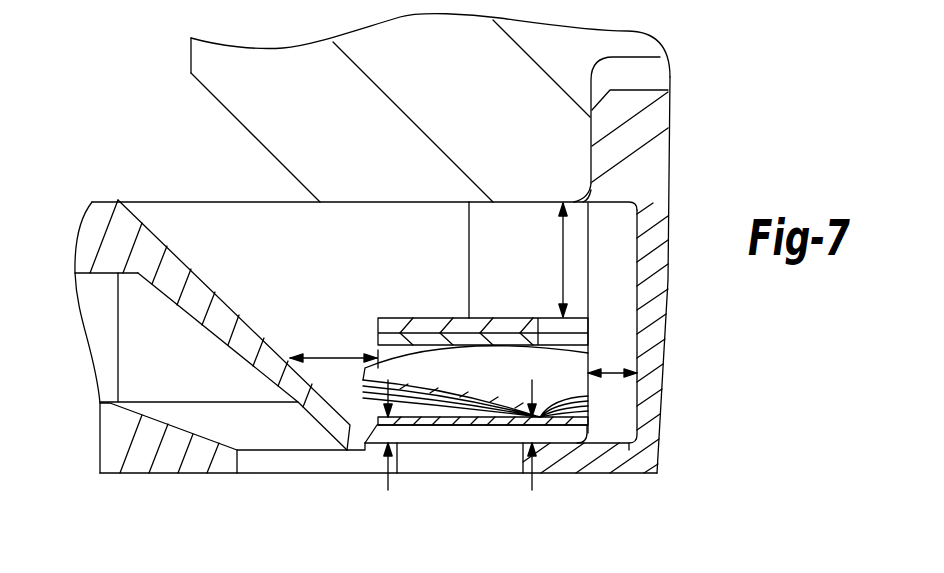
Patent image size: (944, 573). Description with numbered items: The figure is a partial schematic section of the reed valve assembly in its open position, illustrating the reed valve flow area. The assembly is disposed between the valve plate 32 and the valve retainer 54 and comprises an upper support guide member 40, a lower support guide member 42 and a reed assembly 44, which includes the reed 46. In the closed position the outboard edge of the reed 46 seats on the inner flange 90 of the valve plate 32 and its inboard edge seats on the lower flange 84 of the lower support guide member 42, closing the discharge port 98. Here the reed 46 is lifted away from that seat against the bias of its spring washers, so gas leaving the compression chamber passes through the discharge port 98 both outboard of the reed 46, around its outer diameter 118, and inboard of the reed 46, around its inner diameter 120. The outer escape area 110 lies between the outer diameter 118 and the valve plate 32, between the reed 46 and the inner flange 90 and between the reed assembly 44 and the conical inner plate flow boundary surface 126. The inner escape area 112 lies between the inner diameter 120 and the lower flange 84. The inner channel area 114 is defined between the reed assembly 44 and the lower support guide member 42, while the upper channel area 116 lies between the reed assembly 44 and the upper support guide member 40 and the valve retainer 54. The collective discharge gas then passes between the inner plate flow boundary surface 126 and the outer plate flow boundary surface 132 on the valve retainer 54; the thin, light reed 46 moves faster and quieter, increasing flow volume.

The valve plate 32 is at (100, 217).
The upper support guide member 40 is at (658, 145).
The lower support guide member 42 is at (657, 387).
The reed assembly 44 is at (360, 317).
The reed 46 is at (410, 425).
The valve retainer 54 is at (332, 62).
The lower flange 84 is at (545, 458).
The inner flange 90 is at (380, 443).
The discharge port 98 is at (487, 460).
The outer escape area 110 is at (365, 410).
The inner escape area 112 is at (587, 432).
The inner channel area 114 is at (618, 352).
The upper channel area 116 is at (432, 235).
The outer diameter of the reed 118 is at (377, 424).
The inner diameter of the reed 120 is at (540, 418).
The inner plate flow boundary surface 126 is at (208, 268).
The outer plate flow boundary surface 132 is at (213, 97).